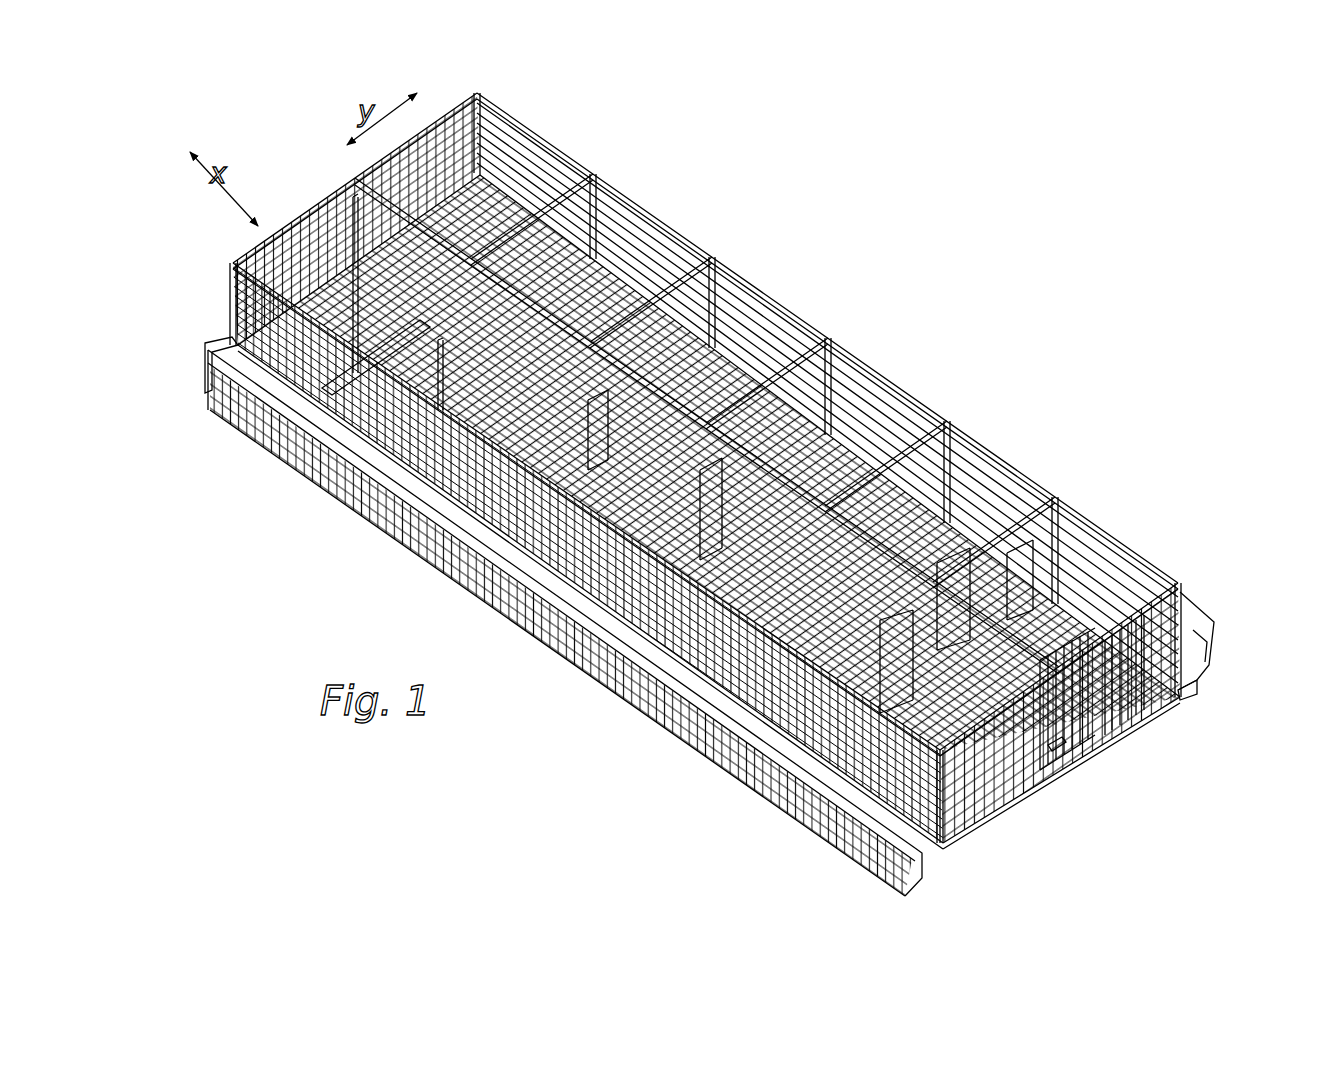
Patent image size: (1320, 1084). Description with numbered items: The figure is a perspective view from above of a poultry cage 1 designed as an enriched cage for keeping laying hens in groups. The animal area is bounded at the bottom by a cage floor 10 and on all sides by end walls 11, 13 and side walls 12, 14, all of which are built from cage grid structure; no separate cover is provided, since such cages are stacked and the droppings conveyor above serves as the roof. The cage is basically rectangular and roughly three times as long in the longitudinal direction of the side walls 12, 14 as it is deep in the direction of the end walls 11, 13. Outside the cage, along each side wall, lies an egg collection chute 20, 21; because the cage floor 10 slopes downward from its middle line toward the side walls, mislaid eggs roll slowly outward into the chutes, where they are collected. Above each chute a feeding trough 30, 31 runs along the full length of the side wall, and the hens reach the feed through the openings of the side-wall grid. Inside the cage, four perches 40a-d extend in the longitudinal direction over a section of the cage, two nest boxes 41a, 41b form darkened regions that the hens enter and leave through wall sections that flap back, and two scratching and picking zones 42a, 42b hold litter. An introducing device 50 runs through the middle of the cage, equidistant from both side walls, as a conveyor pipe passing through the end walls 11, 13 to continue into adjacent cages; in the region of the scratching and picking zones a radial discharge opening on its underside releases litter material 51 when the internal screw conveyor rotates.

The poultry cage 1 is at (963, 362).
The cage floor 10 is at (667, 230).
The end wall 11 is at (318, 255).
The side wall 12 is at (233, 338).
The end wall 13 is at (1040, 780).
The side wall 14 is at (767, 333).
The egg collection chute 20 is at (910, 880).
The egg collection chute 21 is at (1193, 677).
The feeding trough 30 is at (947, 857).
The feeding trough 31 is at (1197, 632).
The perches 40a-d is at (935, 530).
The nest box 41a is at (1000, 707).
The nest box 41b is at (1147, 693).
The scratching and picking zone 42a is at (437, 343).
The scratching and picking zone 42b is at (597, 200).
The introducing device 50 is at (1055, 752).
The litter material 51 is at (330, 388).